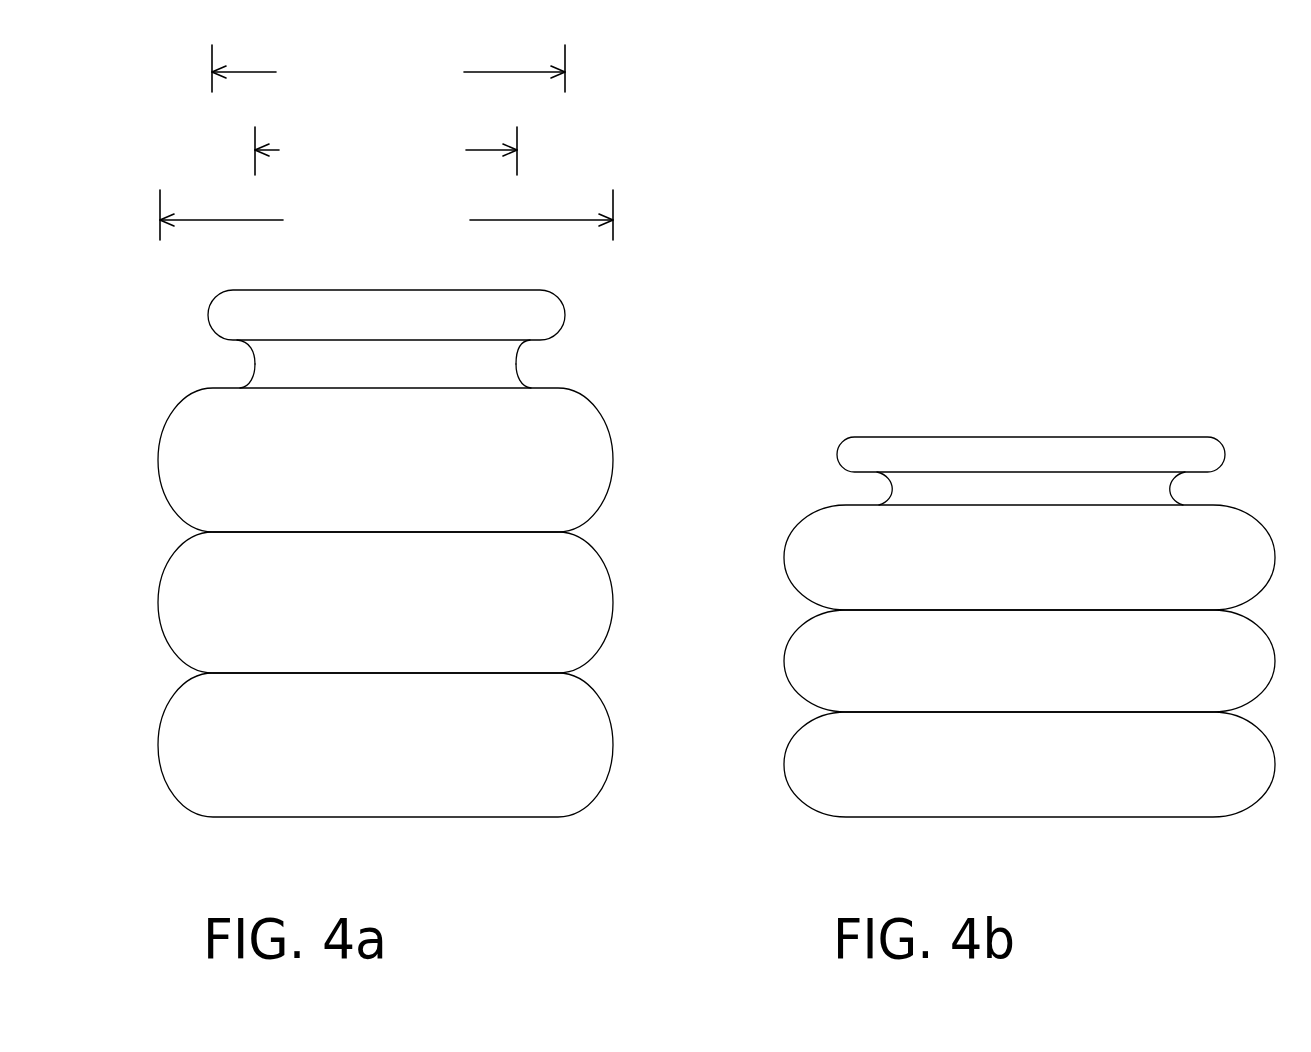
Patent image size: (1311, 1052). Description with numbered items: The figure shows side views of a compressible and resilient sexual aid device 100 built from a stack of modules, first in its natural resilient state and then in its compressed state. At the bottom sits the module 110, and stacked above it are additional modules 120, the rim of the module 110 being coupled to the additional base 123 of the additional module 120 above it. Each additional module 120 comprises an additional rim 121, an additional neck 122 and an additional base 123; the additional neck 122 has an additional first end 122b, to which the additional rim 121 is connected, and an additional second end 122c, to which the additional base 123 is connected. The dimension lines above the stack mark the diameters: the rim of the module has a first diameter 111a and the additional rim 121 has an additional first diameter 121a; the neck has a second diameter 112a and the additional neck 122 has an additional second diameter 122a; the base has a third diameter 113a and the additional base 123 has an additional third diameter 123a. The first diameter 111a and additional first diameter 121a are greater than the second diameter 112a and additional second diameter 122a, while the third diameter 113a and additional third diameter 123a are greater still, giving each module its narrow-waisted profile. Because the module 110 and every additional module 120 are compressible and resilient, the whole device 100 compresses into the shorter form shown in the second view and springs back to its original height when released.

In FIG. 4a, the compressible and resilient sexual aid device 100 is at (643, 155).
In FIG. 4b, the compressible and resilient sexual aid device 100 is at (1162, 200).
In FIG. 4a, the module 110 is at (227, 762).
In FIG. 4b, the module 110 is at (953, 760).
In FIG. 4a, the additional module 120 is at (397, 553).
In FIG. 4b, the additional module 120 is at (1029, 500).
In FIG. 4a, the additional rim 121 is at (217, 313).
In FIG. 4a, the additional neck 122 is at (429, 374).
In FIG. 4a, the additional first end 122b is at (448, 348).
In FIG. 4a, the additional second end 122c is at (492, 380).
In FIG. 4a, the additional base 123 is at (340, 553).
In FIG. 4a, the first diameter 111a is at (388, 72).
In FIG. 4a, the additional first diameter 121a is at (388, 72).
In FIG. 4a, the second diameter 112a is at (386, 150).
In FIG. 4a, the additional second diameter 122a is at (386, 150).
In FIG. 4a, the third diameter 113a is at (386, 217).
In FIG. 4a, the additional third diameter 123a is at (386, 217).